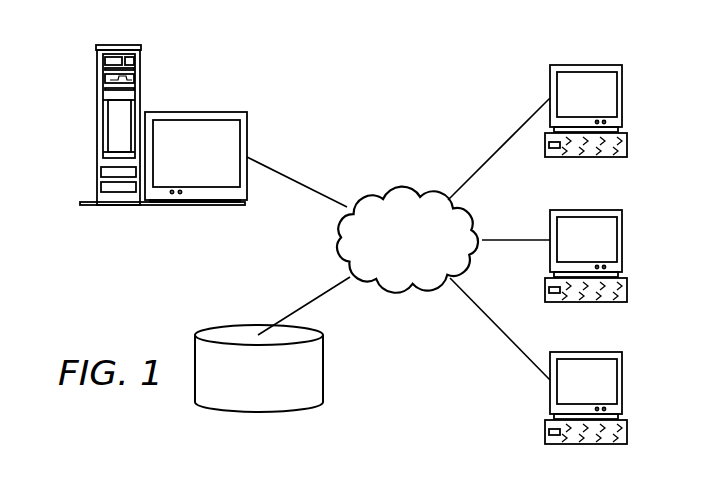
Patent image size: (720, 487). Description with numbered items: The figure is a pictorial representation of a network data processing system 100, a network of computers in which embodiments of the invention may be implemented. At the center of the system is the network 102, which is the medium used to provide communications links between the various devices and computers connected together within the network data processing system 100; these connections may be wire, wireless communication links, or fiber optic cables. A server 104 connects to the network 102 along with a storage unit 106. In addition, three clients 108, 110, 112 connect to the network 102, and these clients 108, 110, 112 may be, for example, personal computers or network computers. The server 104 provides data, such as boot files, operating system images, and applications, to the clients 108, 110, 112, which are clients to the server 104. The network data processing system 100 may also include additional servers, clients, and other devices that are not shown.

The network data processing system 100 is at (464, 70).
The network 102 is at (378, 192).
The server 104 is at (98, 127).
The storage unit 106 is at (240, 410).
The client 108 is at (622, 97).
The client 110 is at (622, 240).
The client 112 is at (622, 382).